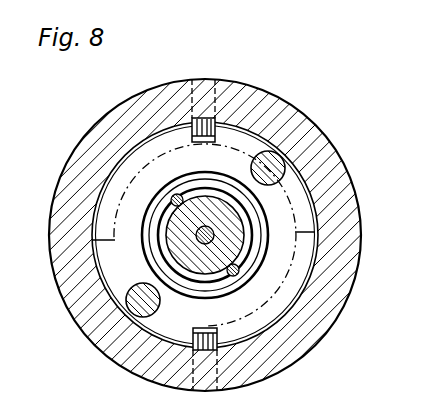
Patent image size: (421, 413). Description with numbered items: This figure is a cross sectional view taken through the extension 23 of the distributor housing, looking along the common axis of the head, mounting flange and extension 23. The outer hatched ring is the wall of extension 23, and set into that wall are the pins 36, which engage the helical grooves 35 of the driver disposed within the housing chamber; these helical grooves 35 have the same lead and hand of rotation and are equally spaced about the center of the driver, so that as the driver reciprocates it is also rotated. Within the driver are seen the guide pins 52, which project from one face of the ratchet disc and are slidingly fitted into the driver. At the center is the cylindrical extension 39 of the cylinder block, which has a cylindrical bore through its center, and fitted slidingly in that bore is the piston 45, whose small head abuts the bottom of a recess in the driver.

The extension 23 is at (321, 144).
The helical grooves 35 is at (128, 166).
The pins 36 is at (215, 130).
The extension to the block 39 is at (233, 247).
The piston 45 is at (203, 227).
The guide pins 52 is at (274, 183).